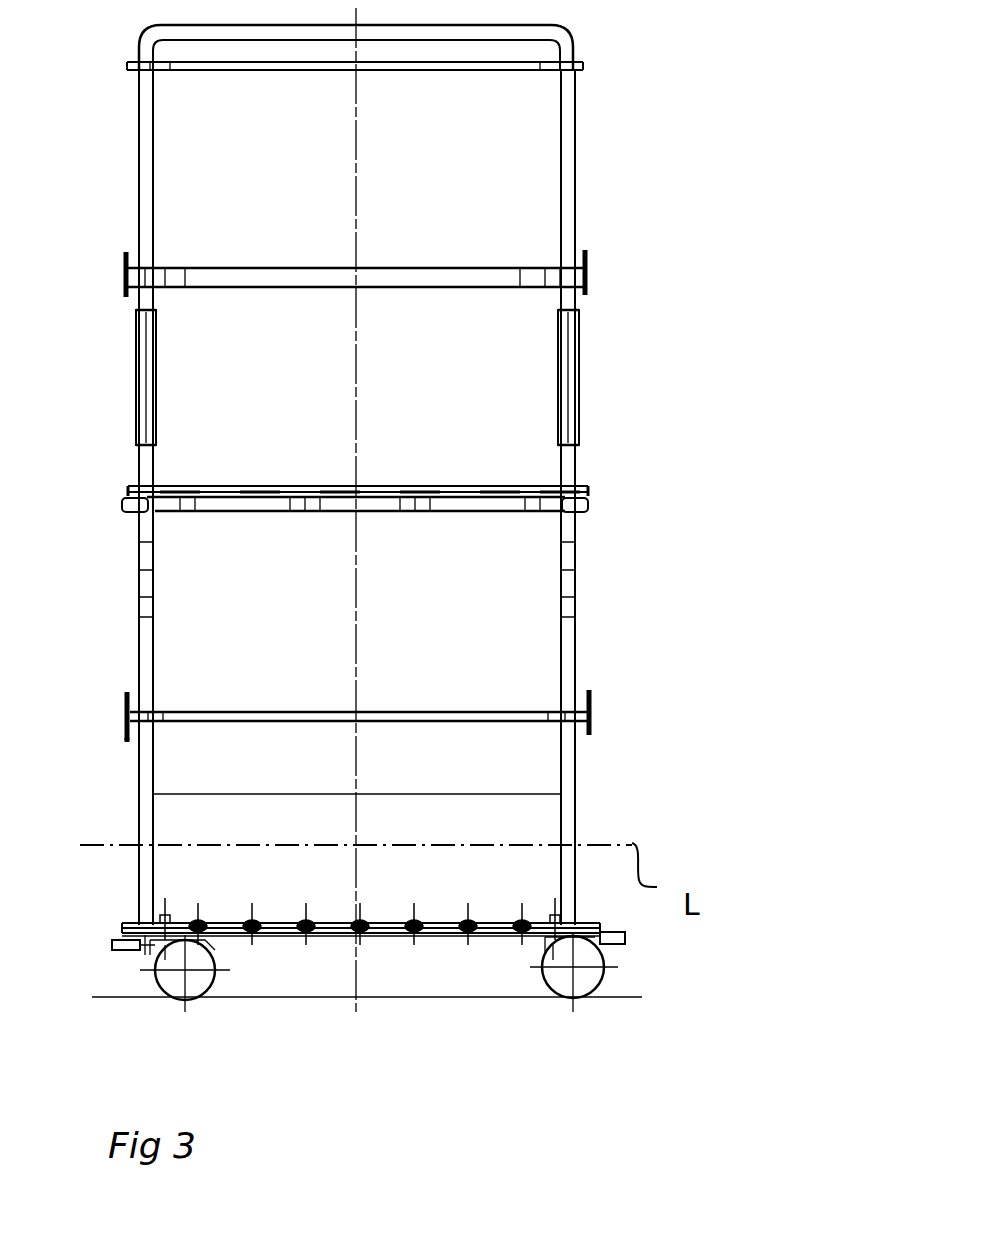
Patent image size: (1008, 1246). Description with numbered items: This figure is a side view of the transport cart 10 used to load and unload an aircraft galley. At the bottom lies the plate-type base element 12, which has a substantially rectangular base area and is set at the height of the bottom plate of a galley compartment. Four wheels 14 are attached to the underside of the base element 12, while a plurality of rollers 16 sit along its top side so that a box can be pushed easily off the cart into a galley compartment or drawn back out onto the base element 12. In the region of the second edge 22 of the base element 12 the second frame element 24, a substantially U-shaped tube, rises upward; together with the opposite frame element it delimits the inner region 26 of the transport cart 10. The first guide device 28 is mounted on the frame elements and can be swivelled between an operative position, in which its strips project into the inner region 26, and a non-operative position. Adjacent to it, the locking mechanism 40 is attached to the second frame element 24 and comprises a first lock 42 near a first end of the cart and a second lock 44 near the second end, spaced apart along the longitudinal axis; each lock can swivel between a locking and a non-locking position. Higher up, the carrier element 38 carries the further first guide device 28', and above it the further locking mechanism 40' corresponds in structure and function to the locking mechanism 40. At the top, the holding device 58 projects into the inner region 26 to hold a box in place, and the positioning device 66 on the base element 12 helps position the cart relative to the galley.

The transport cart 10 is at (678, 257).
The base element 12 is at (443, 930).
The wheels 14 is at (197, 1000).
The rollers 16 is at (305, 915).
The second edge 22 is at (337, 930).
The second frame element 24 is at (572, 646).
The inner region 26 is at (522, 400).
The first guide device 28 is at (427, 701).
The further first guide device 28' is at (435, 473).
The carrier element 38 is at (469, 506).
The locking mechanism 40 is at (89, 695).
The further locking mechanism 40' is at (303, 255).
The first lock 42 is at (130, 740).
The second lock 44 is at (591, 735).
The holding device 58 is at (592, 62).
The positioning device 66 is at (125, 950).